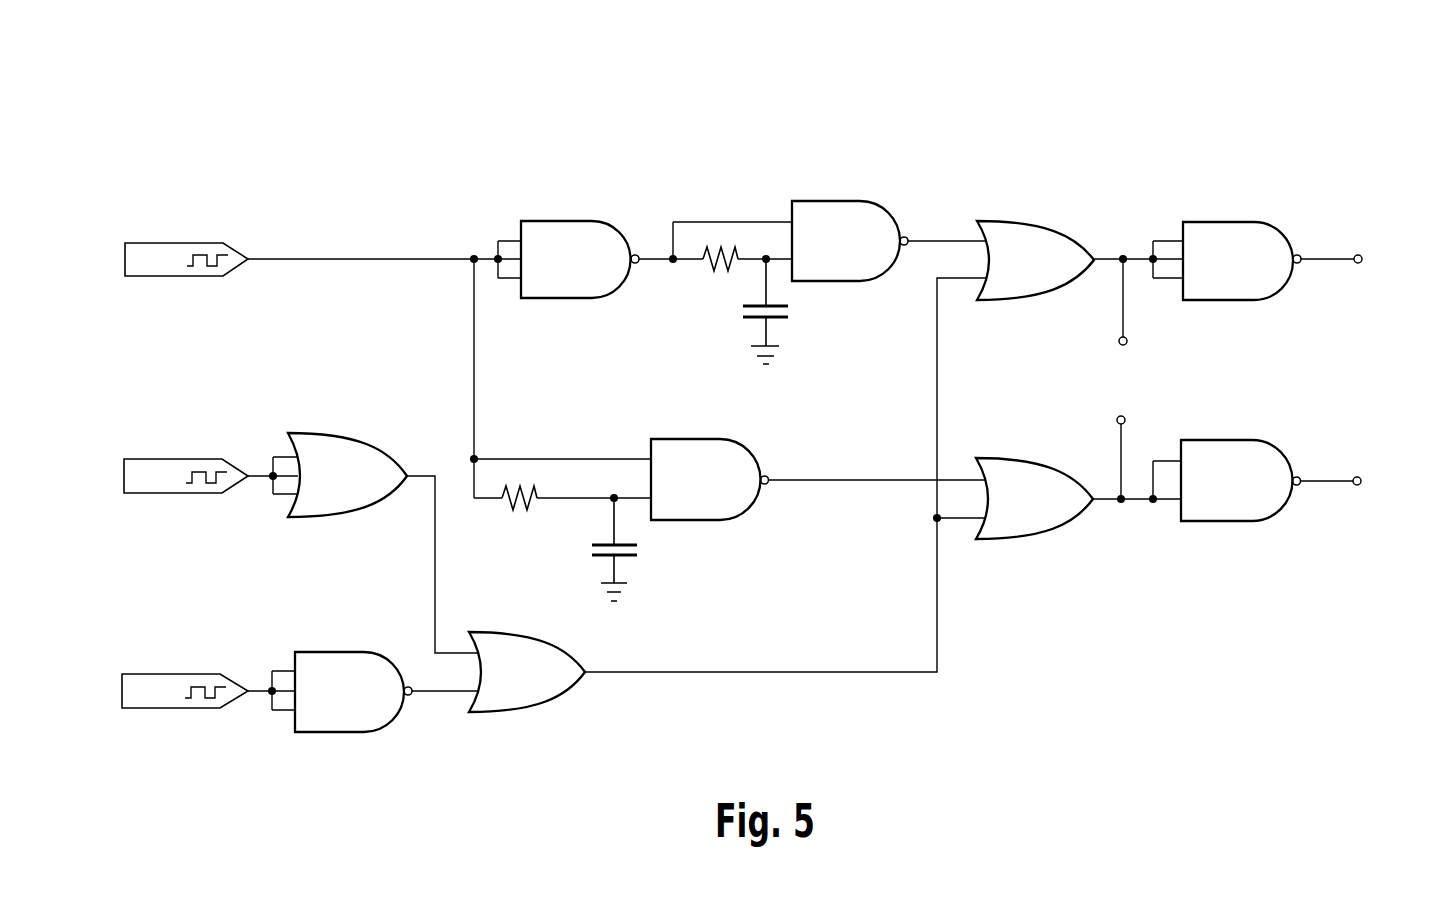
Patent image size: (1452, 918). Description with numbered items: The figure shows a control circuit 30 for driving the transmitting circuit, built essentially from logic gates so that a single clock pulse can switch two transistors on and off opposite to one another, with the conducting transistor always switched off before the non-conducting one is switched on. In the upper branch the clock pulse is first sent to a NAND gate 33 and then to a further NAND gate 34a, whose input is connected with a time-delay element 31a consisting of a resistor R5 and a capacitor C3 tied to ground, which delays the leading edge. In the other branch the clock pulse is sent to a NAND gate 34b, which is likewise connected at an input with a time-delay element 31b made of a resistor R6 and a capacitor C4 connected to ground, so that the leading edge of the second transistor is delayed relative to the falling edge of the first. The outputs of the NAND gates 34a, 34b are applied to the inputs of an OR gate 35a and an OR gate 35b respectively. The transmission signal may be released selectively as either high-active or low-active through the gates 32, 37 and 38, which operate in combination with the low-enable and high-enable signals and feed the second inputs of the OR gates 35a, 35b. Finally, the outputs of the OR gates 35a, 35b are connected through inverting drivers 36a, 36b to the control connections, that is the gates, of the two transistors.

The control circuit 30 is at (930, 742).
The time-delay element 31a is at (781, 310).
The time-delay element 31b is at (604, 548).
The gate 32 is at (366, 458).
The NAND gate 33 is at (594, 241).
The NAND gate 34a is at (864, 222).
The NAND gate 34b is at (723, 500).
The OR gate 35a is at (1017, 237).
The OR gate 35b is at (1017, 475).
The inverting driver 36a is at (1265, 237).
The inverting driver 36b is at (1262, 454).
The gate 37 is at (368, 712).
The gate 38 is at (545, 690).
The resistor R5 is at (721, 266).
The resistor R6 is at (520, 505).
The capacitor C3 is at (761, 311).
The capacitor C4 is at (608, 549).